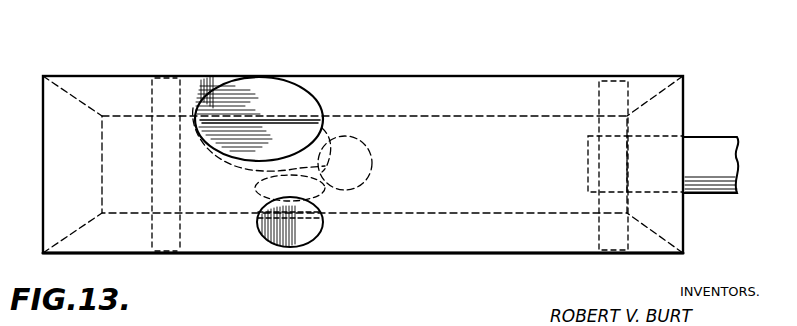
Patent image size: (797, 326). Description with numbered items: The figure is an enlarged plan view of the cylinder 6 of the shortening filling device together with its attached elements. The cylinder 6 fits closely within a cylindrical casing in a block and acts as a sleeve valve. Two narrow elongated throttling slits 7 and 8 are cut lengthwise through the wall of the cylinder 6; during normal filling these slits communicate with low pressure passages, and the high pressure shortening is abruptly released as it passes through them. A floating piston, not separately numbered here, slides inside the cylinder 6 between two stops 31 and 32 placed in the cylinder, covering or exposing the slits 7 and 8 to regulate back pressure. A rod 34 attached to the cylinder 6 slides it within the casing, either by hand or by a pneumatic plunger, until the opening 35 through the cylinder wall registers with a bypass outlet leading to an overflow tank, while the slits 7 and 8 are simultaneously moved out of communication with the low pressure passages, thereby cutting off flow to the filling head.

The cylinder 6 is at (465, 77).
The throttling slit 7 is at (263, 120).
The throttling slit 8 is at (293, 200).
The stop 31 is at (153, 100).
The stop 32 is at (642, 77).
The rod 34 is at (710, 137).
The opening 35 is at (373, 150).